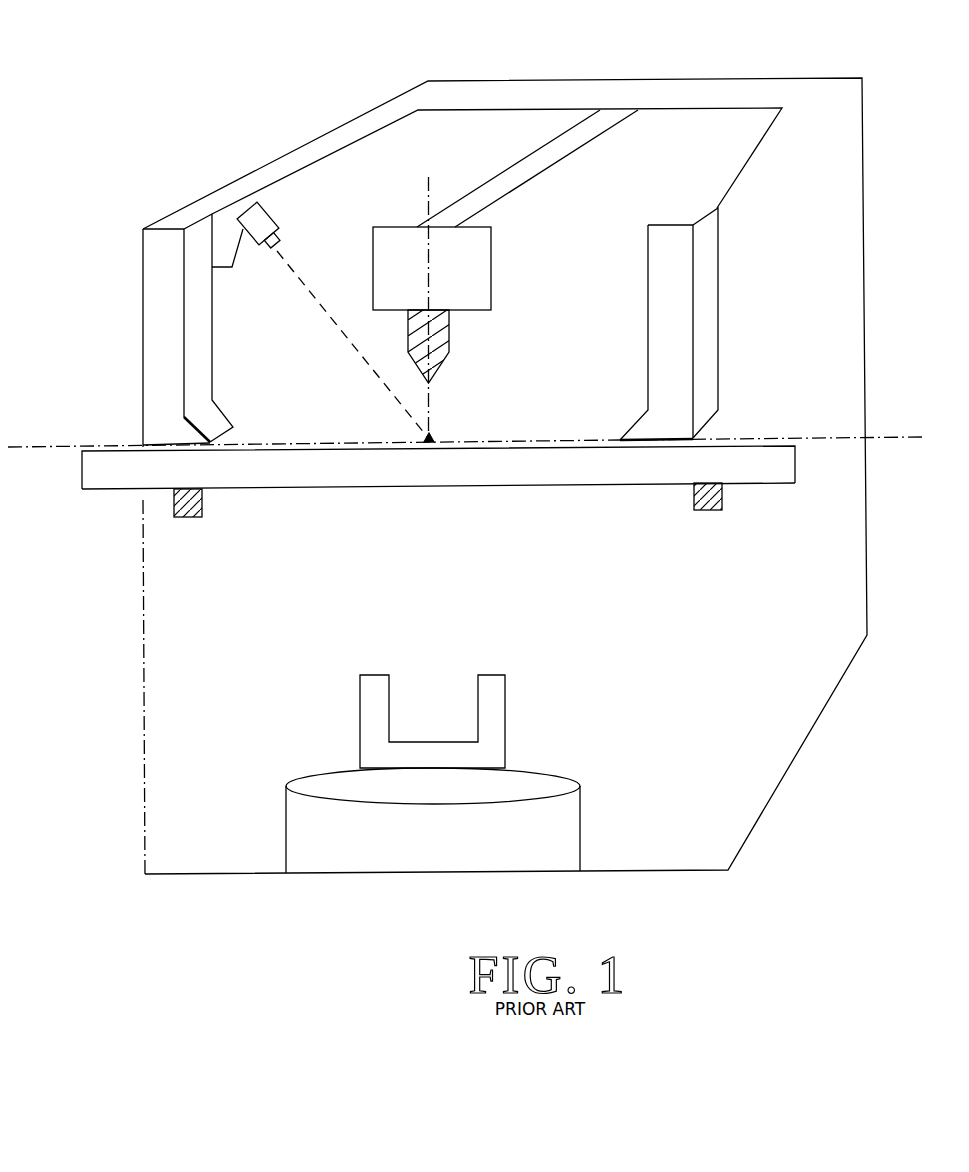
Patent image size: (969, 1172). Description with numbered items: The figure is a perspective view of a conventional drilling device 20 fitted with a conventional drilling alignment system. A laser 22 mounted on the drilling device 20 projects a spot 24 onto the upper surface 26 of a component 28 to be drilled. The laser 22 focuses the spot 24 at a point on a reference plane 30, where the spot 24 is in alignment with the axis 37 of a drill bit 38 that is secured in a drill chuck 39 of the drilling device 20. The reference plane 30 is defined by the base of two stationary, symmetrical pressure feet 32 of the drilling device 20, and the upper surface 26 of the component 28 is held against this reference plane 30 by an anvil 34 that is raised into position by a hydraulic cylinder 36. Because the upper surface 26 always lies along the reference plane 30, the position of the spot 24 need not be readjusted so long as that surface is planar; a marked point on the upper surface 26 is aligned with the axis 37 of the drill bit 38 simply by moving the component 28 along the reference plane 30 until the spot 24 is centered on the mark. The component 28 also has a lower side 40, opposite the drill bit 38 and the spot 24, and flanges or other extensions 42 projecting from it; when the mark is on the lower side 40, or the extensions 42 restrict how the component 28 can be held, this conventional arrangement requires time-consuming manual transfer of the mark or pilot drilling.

The drilling device 20 is at (738, 79).
The laser 22 is at (280, 214).
The spot 24 is at (439, 432).
The upper surface 26 is at (120, 449).
The component 28 is at (80, 470).
The reference plane 30 is at (887, 437).
The pressure feet 32 is at (140, 259).
The anvil 34 is at (507, 719).
The hydraulic cylinder 36 is at (582, 783).
The axis 37 is at (432, 186).
The drill bit 38 is at (453, 341).
The drill chuck 39 is at (496, 260).
The lower side 40 is at (115, 490).
The extensions 42 is at (196, 517).